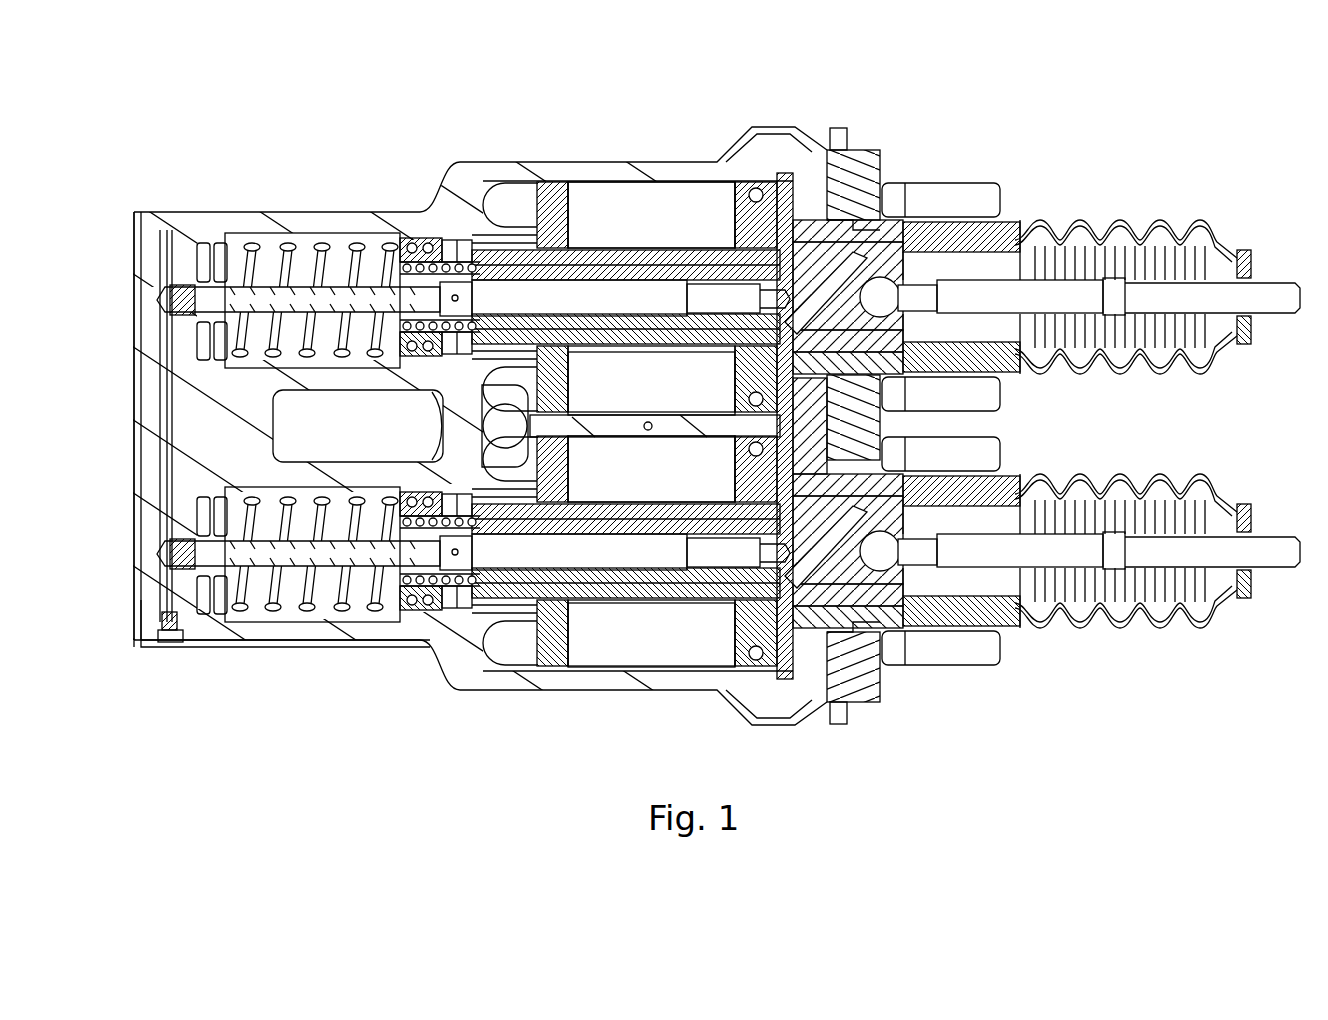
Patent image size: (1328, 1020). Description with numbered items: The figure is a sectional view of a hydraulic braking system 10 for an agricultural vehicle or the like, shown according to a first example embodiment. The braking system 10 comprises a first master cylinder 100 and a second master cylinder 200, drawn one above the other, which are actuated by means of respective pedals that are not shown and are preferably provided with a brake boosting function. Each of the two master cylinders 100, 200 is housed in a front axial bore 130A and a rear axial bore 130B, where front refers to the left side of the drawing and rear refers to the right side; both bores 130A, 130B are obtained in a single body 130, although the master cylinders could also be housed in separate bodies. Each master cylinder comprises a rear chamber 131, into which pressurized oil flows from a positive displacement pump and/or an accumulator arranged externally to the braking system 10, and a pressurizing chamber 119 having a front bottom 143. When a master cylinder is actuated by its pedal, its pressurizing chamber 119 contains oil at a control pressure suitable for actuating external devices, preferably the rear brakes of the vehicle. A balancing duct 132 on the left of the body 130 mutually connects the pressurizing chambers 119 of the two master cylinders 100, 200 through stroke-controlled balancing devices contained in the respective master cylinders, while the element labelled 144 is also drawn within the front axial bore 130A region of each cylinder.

The hydraulic braking system 10 is at (1218, 136).
The first master cylinder 100 is at (430, 121).
The second master cylinder 200 is at (450, 729).
The pressurizing chamber 119 is at (265, 246).
The single body 130 is at (190, 636).
The front axial bore 130A is at (290, 250).
The rear axial bore 130B is at (624, 192).
The rear chamber 131 is at (773, 220).
The balancing duct 132 is at (168, 492).
The front bottom 143 is at (180, 258).
The spring guide rod 144 is at (335, 256).